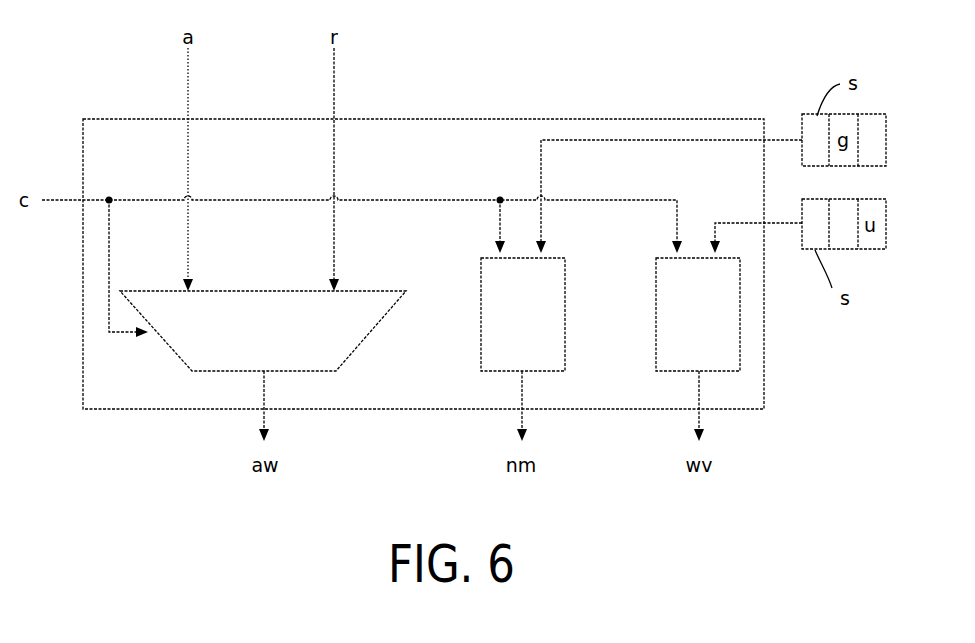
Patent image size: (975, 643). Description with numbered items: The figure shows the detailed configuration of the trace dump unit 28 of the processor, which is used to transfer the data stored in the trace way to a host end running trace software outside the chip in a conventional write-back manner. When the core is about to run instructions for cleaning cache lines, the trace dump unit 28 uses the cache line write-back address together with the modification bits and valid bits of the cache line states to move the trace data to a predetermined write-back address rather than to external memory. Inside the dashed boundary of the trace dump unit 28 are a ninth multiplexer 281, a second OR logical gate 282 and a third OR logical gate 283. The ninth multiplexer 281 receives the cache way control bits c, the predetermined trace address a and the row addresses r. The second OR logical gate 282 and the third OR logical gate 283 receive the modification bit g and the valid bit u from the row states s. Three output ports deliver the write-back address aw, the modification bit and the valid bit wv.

The trace dump unit 28 is at (416, 120).
The ninth multiplexer 281 is at (360, 295).
The second OR logical gate 282 is at (565, 291).
The third OR logical gate 283 is at (655, 315).